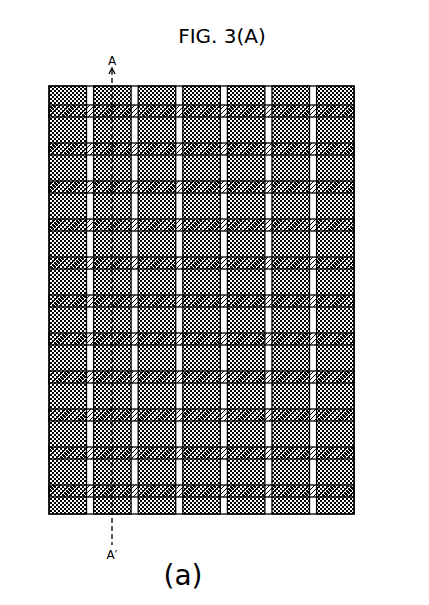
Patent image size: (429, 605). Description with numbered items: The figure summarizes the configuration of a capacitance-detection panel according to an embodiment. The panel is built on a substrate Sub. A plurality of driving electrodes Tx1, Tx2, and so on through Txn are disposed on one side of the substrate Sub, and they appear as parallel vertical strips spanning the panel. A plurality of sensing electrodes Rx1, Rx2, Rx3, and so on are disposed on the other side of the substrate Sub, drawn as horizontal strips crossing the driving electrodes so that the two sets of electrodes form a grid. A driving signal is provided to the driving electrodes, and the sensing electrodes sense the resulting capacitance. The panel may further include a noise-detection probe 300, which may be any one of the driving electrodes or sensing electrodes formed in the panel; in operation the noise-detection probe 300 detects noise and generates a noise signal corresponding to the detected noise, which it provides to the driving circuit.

The noise-detection probe 300 is at (226, 313).
The sensing electrode Rx1 is at (354, 109).
The sensing electrode Rx2 is at (354, 147).
The sensing electrode Rx3 is at (354, 186).
The driving electrode Tx1 is at (66, 514).
The driving electrode Tx2 is at (100, 514).
The driving electrode Txn is at (335, 514).
The substrate Sub is at (178, 514).